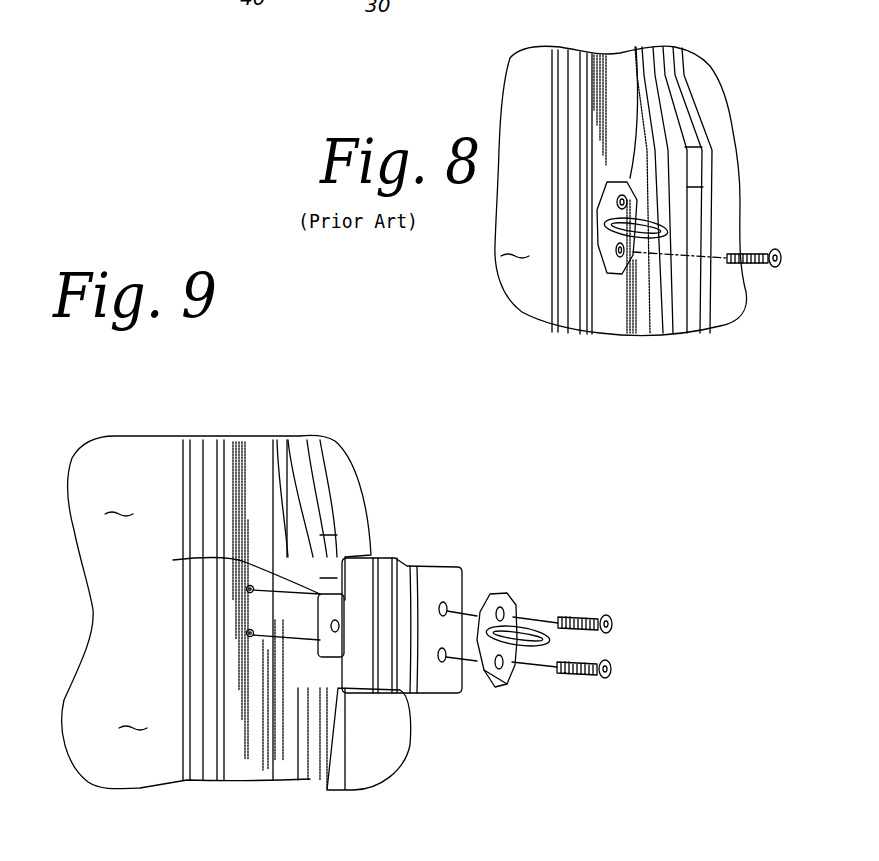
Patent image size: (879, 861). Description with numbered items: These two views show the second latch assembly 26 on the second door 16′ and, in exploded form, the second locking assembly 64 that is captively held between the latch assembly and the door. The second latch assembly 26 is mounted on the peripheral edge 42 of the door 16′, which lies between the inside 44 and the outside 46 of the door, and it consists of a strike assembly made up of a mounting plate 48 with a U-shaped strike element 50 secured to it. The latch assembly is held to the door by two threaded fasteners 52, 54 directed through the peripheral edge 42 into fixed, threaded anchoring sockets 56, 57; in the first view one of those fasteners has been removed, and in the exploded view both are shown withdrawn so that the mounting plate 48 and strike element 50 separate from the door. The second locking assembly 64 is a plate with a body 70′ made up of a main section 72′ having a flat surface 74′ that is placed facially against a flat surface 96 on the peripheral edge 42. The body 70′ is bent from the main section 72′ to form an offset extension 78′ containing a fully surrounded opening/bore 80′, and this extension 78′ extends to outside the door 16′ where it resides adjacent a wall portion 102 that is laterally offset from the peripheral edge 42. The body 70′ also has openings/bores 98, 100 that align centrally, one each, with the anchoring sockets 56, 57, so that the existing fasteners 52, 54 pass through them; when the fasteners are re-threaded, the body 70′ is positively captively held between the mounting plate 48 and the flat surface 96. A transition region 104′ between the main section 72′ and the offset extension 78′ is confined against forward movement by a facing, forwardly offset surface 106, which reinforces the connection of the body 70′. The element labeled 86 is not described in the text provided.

In FIG. 8, the second door 16′ is at (516, 244).
In FIG. 9, the second door 16′ is at (127, 609).
In FIG. 8, the second latch assembly 26 is at (625, 162).
In FIG. 9, the second latch assembly 26 is at (503, 581).
In FIG. 8, the peripheral edge 42 is at (626, 322).
In FIG. 9, the peripheral edge 42 is at (270, 513).
In FIG. 8, the inside 44 is at (540, 60).
In FIG. 9, the inside 44 is at (140, 617).
In FIG. 8, the outside 46 is at (683, 65).
In FIG. 8, the mounting plate 48 is at (618, 258).
In FIG. 9, the mounting plate 48 is at (493, 673).
In FIG. 8, the U-shaped strike element 50 is at (655, 220).
In FIG. 9, the U-shaped strike element 50 is at (545, 633).
In FIG. 8, the threaded fastener 52 is at (770, 246).
In FIG. 9, the threaded fastener 52 is at (613, 673).
In FIG. 8, the threaded fastener 54 is at (628, 198).
In FIG. 9, the threaded fastener 54 is at (617, 623).
In FIG. 9, the threaded anchoring socket 56 is at (250, 592).
In FIG. 8, the threaded anchoring socket 57 is at (633, 253).
In FIG. 9, the threaded anchoring socket 57 is at (249, 637).
In FIG. 9, the second locking assembly 64 is at (457, 563).
In FIG. 9, the body 70′ is at (441, 583).
In FIG. 9, the main section 72′ is at (455, 583).
In FIG. 9, the flat surface 74′ is at (332, 790).
In FIG. 9, the offset extension 78′ is at (173, 560).
In FIG. 9, the opening/bore 80′ is at (337, 633).
In FIG. 9, the rail 86 is at (197, 482).
In FIG. 9, the flat surface 96 is at (263, 473).
In FIG. 9, the opening/bore 98 is at (447, 606).
In FIG. 9, the opening/bore 100 is at (445, 663).
In FIG. 9, the wall portion 102 is at (193, 457).
In FIG. 9, the transition region 104′ is at (395, 553).
In FIG. 9, the forwardly offset surface 106 is at (216, 440).